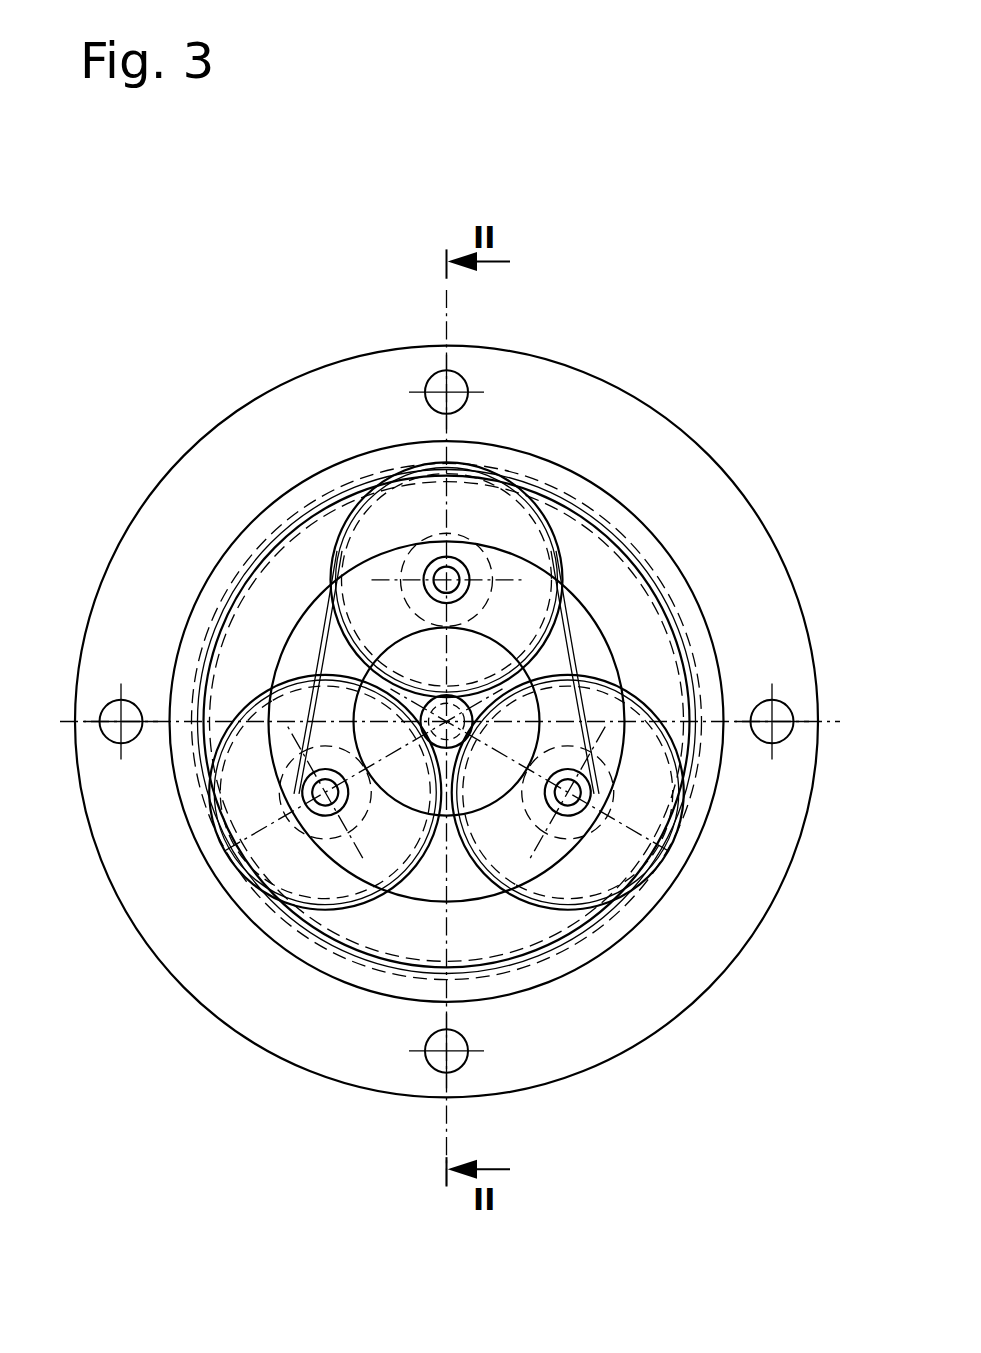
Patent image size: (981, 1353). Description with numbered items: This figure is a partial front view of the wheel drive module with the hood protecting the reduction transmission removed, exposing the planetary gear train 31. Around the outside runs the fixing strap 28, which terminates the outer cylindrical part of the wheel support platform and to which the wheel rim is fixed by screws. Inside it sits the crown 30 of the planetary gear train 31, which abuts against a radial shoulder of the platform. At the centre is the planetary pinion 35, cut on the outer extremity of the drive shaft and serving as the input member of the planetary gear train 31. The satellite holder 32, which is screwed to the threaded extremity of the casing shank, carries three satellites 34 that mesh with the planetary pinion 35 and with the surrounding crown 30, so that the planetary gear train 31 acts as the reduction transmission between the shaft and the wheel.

The fixing strap 28 is at (575, 388).
The crown 30 is at (680, 598).
The planetary gear train 31 is at (328, 991).
The satellite holder 32 is at (310, 640).
The satellites 34 is at (521, 540).
The planetary pinion 35 is at (467, 694).